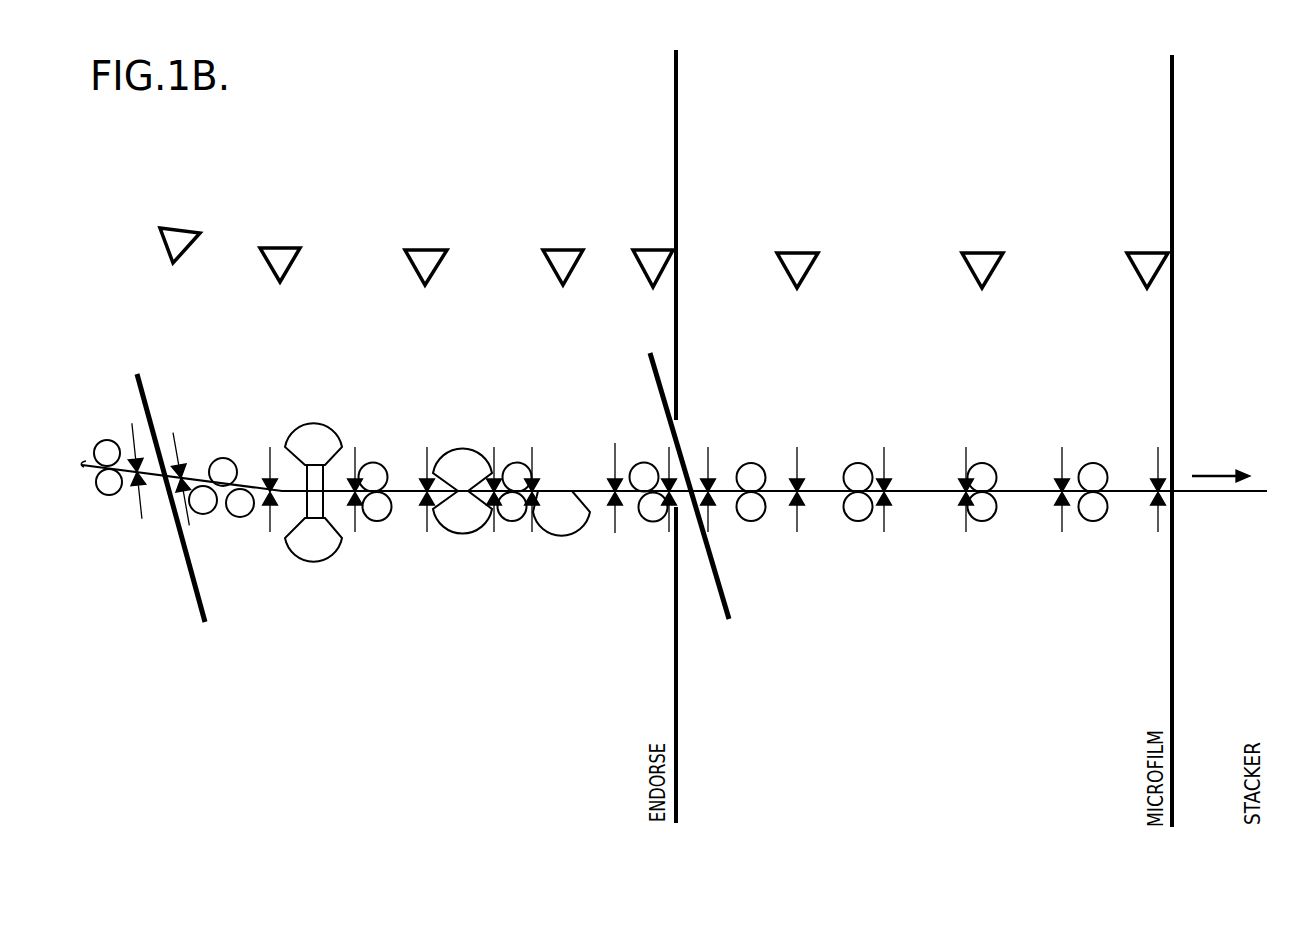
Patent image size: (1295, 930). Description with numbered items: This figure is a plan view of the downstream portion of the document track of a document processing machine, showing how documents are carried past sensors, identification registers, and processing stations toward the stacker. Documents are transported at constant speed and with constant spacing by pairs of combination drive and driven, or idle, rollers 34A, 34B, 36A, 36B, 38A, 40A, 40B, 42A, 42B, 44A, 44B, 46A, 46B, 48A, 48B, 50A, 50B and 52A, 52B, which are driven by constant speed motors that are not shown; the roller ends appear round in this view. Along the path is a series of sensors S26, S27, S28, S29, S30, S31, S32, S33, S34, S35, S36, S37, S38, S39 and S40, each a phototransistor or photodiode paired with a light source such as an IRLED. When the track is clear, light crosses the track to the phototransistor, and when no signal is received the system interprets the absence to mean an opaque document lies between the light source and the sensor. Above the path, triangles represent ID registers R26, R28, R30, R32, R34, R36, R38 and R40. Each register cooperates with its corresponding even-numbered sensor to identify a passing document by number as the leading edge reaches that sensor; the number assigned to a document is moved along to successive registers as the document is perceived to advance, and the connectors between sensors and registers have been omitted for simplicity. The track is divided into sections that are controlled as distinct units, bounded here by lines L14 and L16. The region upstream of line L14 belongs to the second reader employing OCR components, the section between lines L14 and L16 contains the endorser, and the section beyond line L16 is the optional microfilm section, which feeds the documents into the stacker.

The drive roller 34A is at (105, 495).
The idle roller 34B is at (103, 441).
The drive roller 36A is at (198, 514).
The idle roller 36B is at (223, 458).
The drive roller 38A is at (233, 516).
The drive roller 40A is at (382, 520).
The idle roller 40B is at (373, 462).
The drive roller 42A is at (520, 519).
The idle roller 42B is at (517, 462).
The drive roller 44A is at (647, 521).
The idle roller 44B is at (645, 462).
The drive roller 46A is at (757, 520).
The idle roller 46B is at (750, 463).
The drive roller 48A is at (853, 521).
The idle roller 48B is at (858, 463).
The drive roller 50A is at (985, 521).
The idle roller 50B is at (983, 463).
The drive roller 52A is at (1097, 521).
The idle roller 52B is at (1092, 463).
The sensor S26 is at (136, 441).
The sensor S27 is at (179, 518).
The sensor S28 is at (271, 532).
The sensor S29 is at (355, 532).
The sensor S30 is at (427, 533).
The sensor S31 is at (497, 520).
The sensor S32 is at (533, 528).
The sensor S33 is at (613, 534).
The sensor S34 is at (667, 512).
The sensor S35 is at (714, 520).
The sensor S36 is at (796, 517).
The sensor S37 is at (883, 520).
The sensor S38 is at (966, 510).
The sensor S39 is at (1062, 510).
The sensor S40 is at (1157, 510).
The ID register R26 is at (180, 227).
The ID register R28 is at (280, 247).
The ID register R30 is at (425, 249).
The ID register R32 is at (563, 249).
The ID register R34 is at (652, 249).
The ID register R36 is at (797, 252).
The ID register R38 is at (982, 252).
The ID register R40 is at (1147, 252).
The section boundary line L14 is at (141, 374).
The section boundary line L16 is at (656, 358).